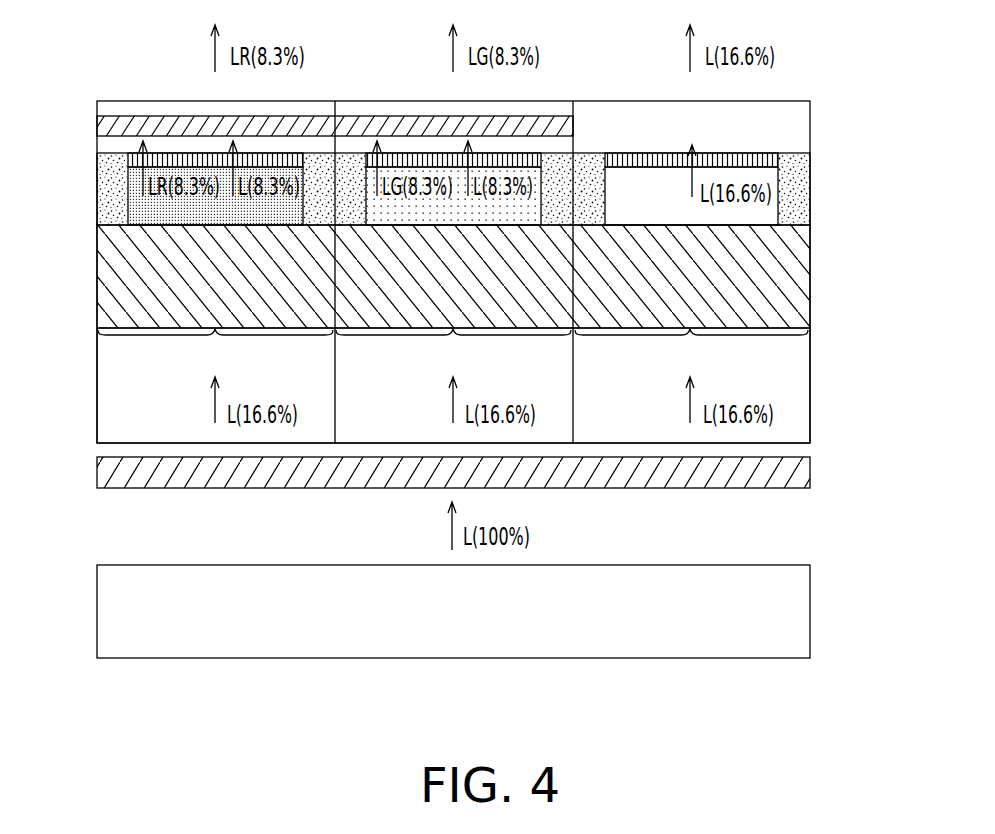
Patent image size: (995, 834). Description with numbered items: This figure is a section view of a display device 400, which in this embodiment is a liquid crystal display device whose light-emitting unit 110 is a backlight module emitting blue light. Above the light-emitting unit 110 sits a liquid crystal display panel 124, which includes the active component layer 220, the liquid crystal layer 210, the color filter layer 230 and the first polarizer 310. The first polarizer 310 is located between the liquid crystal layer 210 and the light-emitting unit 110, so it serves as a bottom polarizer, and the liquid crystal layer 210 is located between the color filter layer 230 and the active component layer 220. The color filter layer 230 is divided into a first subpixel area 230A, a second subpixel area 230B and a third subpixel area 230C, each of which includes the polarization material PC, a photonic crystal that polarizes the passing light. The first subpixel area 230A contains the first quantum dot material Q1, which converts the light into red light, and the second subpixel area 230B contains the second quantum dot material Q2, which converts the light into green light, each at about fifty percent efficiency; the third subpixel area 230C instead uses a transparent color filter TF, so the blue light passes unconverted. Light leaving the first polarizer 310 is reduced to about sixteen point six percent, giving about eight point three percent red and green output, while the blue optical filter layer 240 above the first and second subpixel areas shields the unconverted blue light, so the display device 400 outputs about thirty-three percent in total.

The liquid crystal display panel 124 is at (76, 99).
The blue optical filter layer 240 is at (108, 127).
The polarization material PC is at (129, 162).
The first quantum dot material Q1 is at (137, 194).
The second quantum dot material Q2 is at (525, 217).
The color filter layer 230 is at (813, 153).
The transparent color filter TF is at (753, 216).
The liquid crystal layer 210 is at (813, 225).
The active component layer 220 is at (813, 328).
The first subpixel area 230A is at (215, 350).
The second subpixel area 230B is at (453, 350).
The third subpixel area 230C is at (691, 350).
The first polarizer 310 is at (802, 475).
The light-emitting unit 110 is at (800, 617).
The display device 400 is at (870, 728).